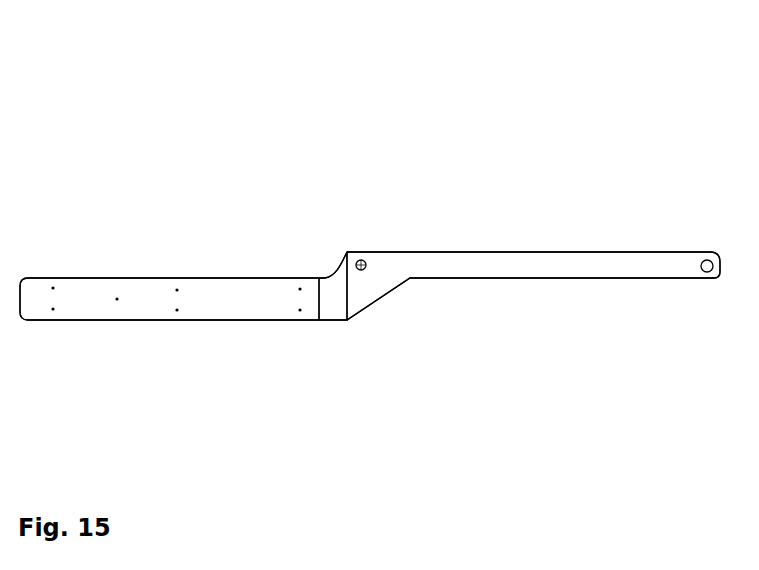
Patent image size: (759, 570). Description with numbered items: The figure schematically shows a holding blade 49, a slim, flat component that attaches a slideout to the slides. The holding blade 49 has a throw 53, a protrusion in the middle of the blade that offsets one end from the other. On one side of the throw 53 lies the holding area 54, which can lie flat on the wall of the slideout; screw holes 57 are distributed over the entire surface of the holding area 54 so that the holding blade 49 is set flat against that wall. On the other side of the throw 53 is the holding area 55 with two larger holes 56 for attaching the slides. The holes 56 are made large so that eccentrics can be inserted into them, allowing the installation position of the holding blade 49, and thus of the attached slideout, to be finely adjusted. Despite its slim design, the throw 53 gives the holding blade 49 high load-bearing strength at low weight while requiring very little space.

The holding blade 49 is at (457, 308).
The throw 53 is at (337, 293).
The holding area 54 is at (89, 295).
The holding area 55 is at (529, 263).
The larger holes 56 is at (365, 262).
The screw holes 57 is at (238, 297).